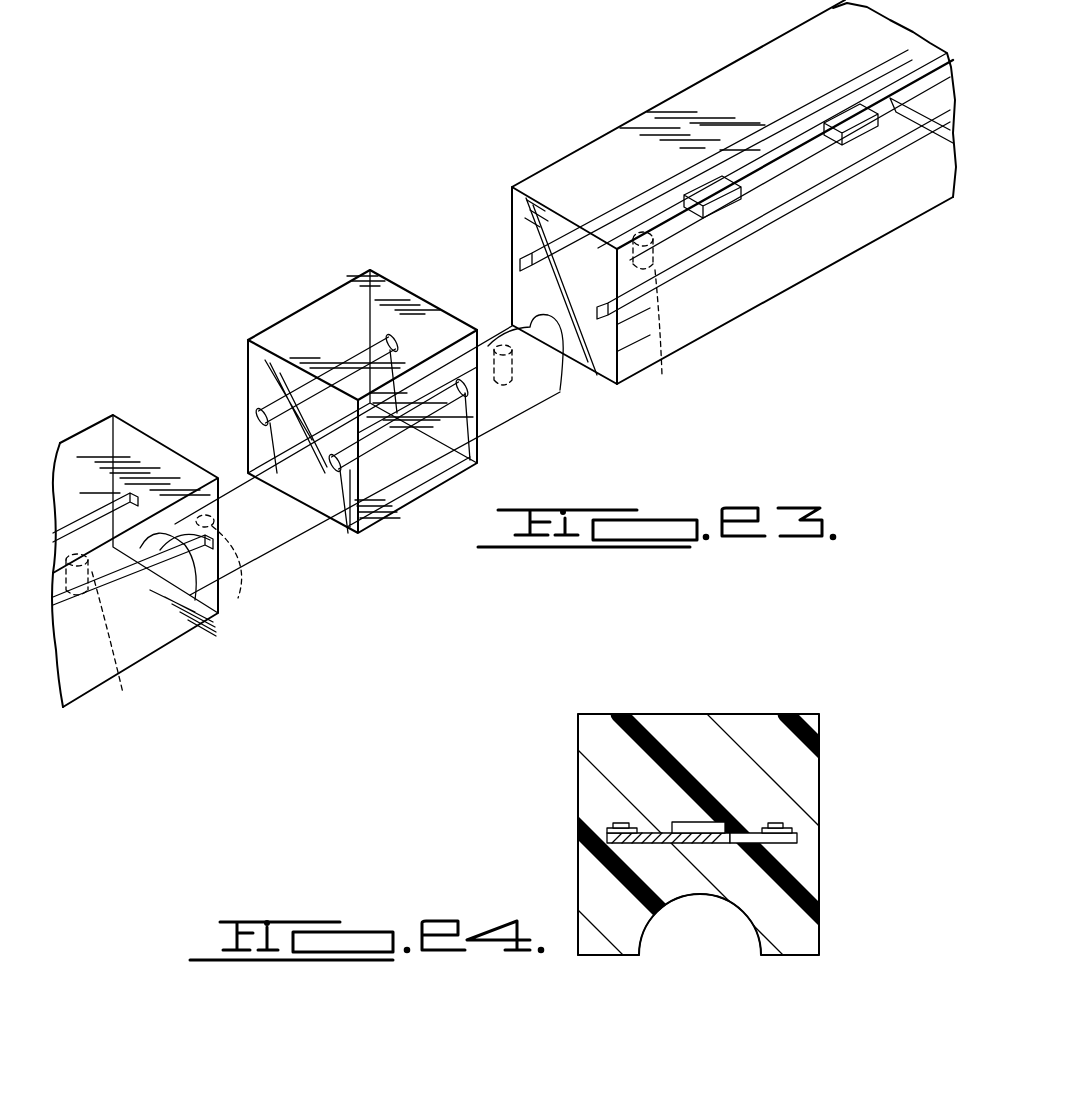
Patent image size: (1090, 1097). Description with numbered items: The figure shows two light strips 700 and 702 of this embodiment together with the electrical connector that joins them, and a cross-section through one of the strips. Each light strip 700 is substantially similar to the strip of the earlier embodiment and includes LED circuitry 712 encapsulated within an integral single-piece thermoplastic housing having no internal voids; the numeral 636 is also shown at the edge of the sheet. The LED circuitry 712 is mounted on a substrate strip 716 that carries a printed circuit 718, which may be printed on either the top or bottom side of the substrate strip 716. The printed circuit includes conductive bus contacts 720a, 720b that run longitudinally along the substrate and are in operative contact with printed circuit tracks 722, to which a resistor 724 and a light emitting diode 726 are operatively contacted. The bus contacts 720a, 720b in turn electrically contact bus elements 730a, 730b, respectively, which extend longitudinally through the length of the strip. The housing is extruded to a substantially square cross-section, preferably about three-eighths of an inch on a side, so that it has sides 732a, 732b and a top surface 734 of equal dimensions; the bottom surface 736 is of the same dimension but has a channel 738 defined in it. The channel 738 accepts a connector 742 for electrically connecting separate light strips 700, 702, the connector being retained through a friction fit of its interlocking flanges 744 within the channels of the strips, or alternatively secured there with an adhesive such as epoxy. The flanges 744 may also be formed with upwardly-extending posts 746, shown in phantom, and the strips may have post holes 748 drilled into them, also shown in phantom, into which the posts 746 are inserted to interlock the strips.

In FIG. 23, the connector element 636 is at (356, 9).
In FIG. 23, the light strip 700 is at (486, 205).
In FIG. 23, the light strip 702 is at (148, 390).
In FIG. 23, the LED circuitry 712 is at (723, 105).
In FIG. 24, the substrate strip 716 is at (733, 848).
In FIG. 23, the printed circuit 718 is at (683, 210).
In FIG. 24, the conductive bus contact 720a is at (583, 830).
In FIG. 24, the conductive bus contact 720b is at (793, 827).
In FIG. 23, the printed circuit tracks 722 is at (785, 188).
In FIG. 23, the resistor 724 is at (853, 120).
In FIG. 23, the light emitting diode 726 is at (707, 203).
In FIG. 24, the bus element 730a is at (612, 825).
In FIG. 24, the bus element 730b is at (790, 823).
In FIG. 24, the side 732a is at (578, 725).
In FIG. 24, the side 732b is at (819, 727).
In FIG. 24, the top surface 734 is at (687, 715).
In FIG. 24, the bottom surface 736 is at (603, 956).
In FIG. 24, the channel 738 is at (729, 926).
In FIG. 23, the connector 742 is at (290, 327).
In FIG. 23, the interlocking flanges 744 is at (487, 332).
In FIG. 23, the posts 746 is at (250, 610).
In FIG. 23, the post holes 748 is at (662, 375).